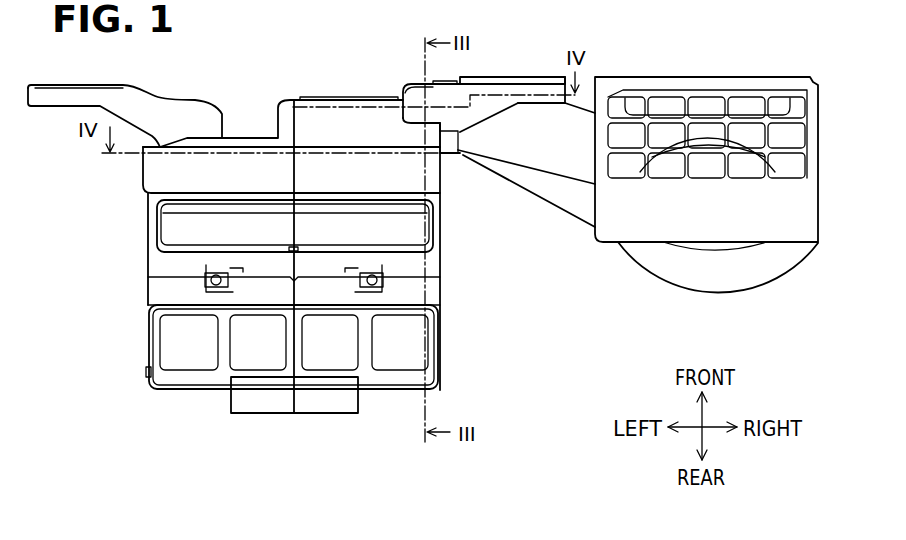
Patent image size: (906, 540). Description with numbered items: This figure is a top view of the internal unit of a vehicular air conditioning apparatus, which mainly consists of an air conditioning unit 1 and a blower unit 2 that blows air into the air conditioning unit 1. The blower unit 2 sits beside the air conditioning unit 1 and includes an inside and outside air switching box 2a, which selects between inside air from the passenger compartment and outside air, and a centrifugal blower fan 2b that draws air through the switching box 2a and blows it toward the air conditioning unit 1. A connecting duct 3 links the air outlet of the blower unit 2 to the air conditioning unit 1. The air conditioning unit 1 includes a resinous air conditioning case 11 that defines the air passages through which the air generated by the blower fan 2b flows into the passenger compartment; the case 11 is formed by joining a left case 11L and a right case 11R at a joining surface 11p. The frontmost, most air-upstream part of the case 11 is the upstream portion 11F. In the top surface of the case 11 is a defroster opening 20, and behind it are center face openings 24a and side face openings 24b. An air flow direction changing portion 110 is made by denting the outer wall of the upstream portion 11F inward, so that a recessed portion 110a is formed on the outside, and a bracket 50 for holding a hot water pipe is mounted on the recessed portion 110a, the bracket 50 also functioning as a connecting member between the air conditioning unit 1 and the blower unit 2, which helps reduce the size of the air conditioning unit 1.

The air conditioning unit 1 is at (326, 82).
The blower unit 2 is at (682, 64).
The inside and outside air switching box 2a is at (818, 202).
The centrifugal blower fan 2b is at (773, 165).
The connecting duct 3 is at (528, 203).
The air conditioning case 11 is at (368, 447).
The upstream portion 11F is at (143, 174).
The left case 11L is at (210, 390).
The right case 11R is at (370, 393).
The joining surface 11p is at (293, 302).
The defroster opening 20 is at (170, 230).
The center face openings 24a is at (250, 357).
The side face openings 24b is at (173, 337).
The bracket 50 is at (527, 77).
The air flow direction changing portion 110 is at (400, 110).
The recessed portion 110a is at (412, 84).